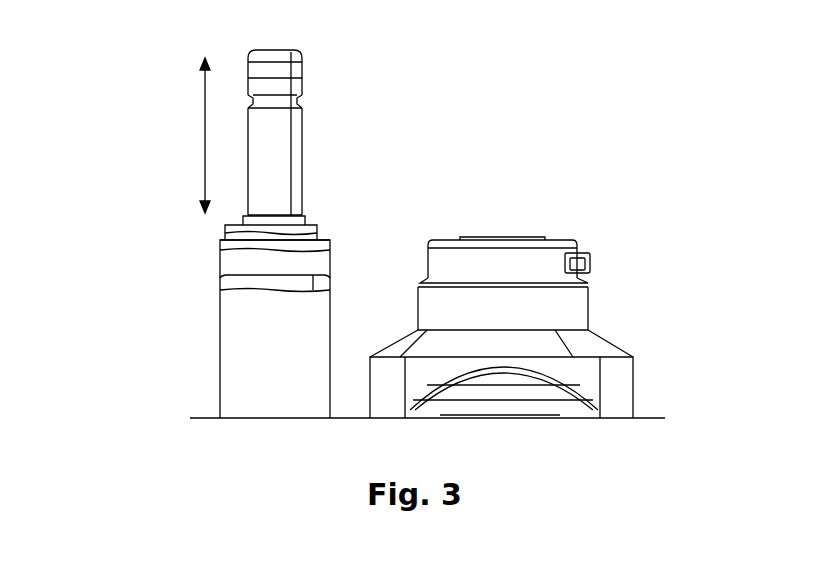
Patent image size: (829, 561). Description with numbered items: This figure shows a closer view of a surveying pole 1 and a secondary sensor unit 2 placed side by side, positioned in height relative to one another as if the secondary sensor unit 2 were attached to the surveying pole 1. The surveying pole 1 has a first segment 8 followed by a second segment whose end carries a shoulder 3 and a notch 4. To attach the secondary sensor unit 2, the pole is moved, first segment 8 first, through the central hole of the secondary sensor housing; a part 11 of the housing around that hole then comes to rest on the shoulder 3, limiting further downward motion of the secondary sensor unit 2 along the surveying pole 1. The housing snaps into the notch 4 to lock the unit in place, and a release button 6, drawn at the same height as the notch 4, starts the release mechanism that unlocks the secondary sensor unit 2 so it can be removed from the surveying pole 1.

The surveying pole 1 is at (195, 275).
The secondary sensor unit 2 is at (623, 323).
The shoulder 3 is at (318, 233).
The notch 4 is at (300, 257).
The release button 6 is at (582, 252).
The first segment 8 is at (205, 142).
The part of the secondary sensor housing 11 is at (552, 240).